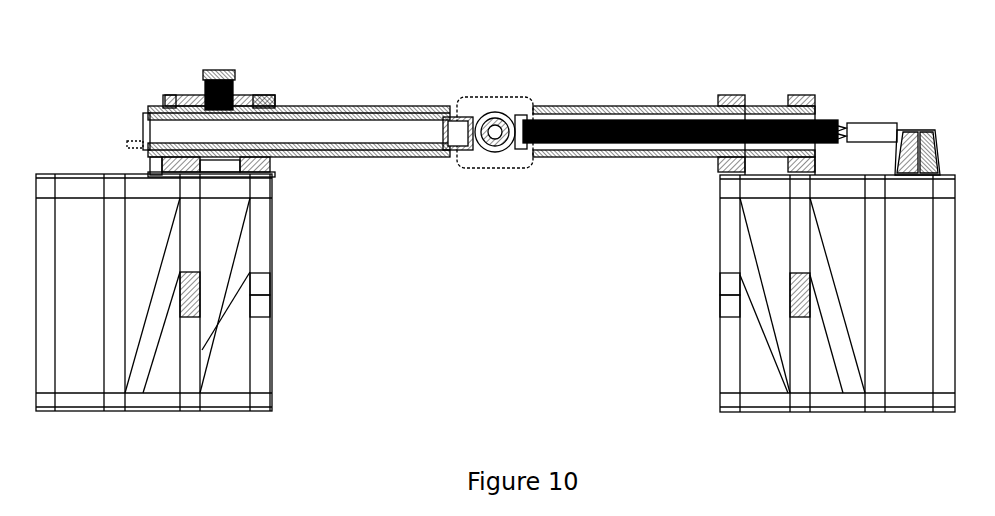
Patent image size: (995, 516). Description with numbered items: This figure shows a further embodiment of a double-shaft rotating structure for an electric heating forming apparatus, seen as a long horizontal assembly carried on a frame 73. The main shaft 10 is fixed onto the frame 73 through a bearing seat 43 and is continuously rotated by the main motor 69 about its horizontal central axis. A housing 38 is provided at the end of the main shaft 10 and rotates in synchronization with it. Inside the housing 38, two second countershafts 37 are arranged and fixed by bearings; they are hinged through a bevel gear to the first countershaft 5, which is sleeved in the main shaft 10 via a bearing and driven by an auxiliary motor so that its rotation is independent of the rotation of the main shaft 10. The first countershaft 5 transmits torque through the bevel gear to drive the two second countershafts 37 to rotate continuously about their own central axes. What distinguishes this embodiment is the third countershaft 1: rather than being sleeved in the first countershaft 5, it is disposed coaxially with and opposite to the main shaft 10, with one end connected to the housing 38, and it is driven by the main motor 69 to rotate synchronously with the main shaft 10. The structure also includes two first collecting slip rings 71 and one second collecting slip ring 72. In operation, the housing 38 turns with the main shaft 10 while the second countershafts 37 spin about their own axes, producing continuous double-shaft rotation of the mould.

The third countershaft 1 is at (673, 108).
The first countershaft 5 is at (320, 106).
The main shaft 10 is at (368, 106).
The second countershaft 37 is at (497, 128).
The housing 38 is at (470, 97).
The bearing seat 43 is at (190, 95).
The main motor 69 is at (216, 70).
The first collecting slip ring 71 is at (527, 150).
The second collecting slip ring 72 is at (872, 130).
The frame 73 is at (618, 112).